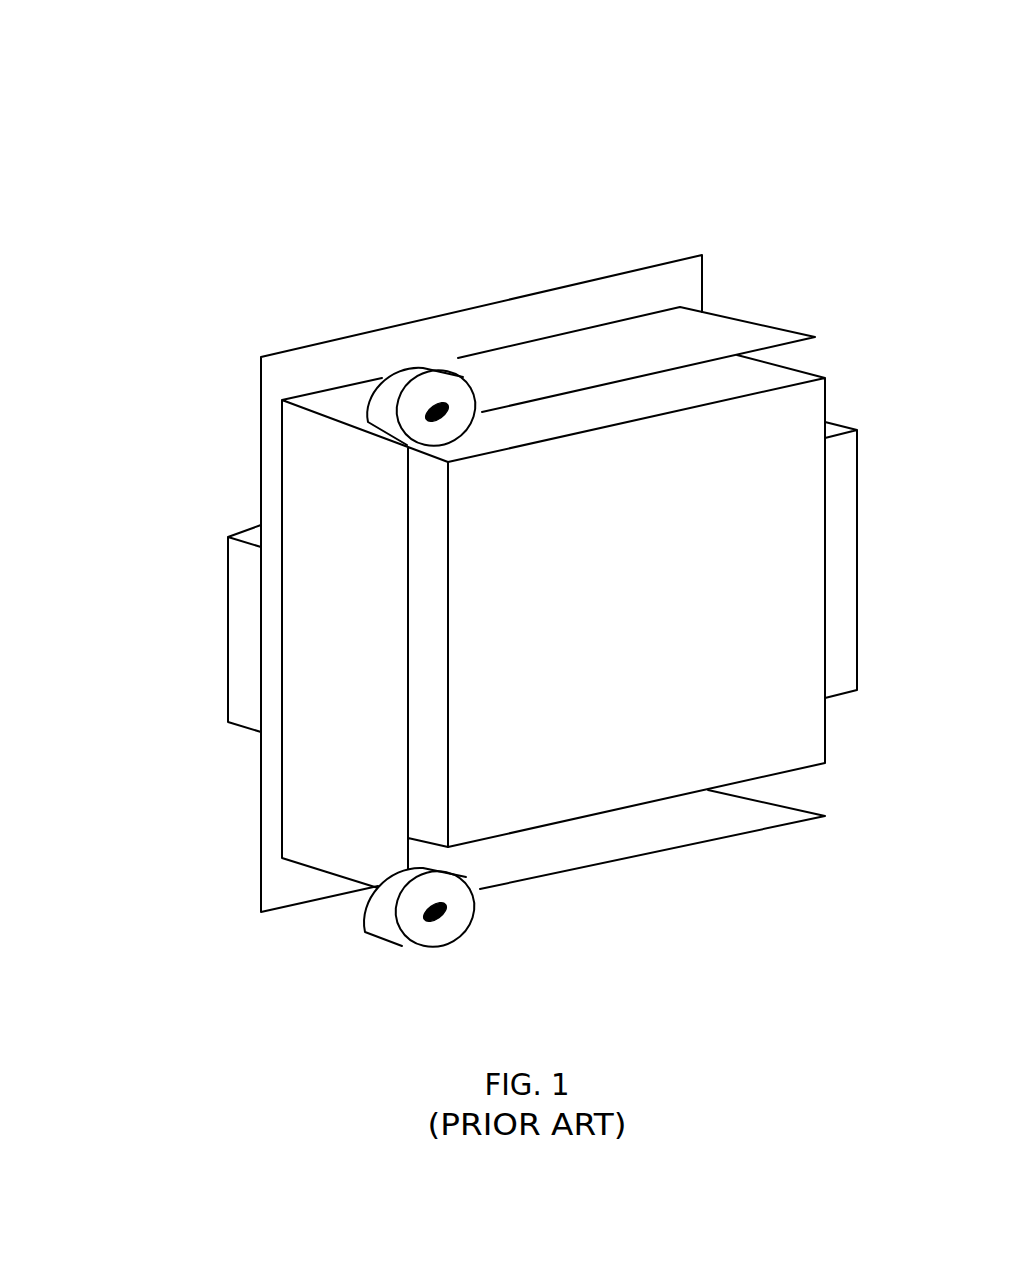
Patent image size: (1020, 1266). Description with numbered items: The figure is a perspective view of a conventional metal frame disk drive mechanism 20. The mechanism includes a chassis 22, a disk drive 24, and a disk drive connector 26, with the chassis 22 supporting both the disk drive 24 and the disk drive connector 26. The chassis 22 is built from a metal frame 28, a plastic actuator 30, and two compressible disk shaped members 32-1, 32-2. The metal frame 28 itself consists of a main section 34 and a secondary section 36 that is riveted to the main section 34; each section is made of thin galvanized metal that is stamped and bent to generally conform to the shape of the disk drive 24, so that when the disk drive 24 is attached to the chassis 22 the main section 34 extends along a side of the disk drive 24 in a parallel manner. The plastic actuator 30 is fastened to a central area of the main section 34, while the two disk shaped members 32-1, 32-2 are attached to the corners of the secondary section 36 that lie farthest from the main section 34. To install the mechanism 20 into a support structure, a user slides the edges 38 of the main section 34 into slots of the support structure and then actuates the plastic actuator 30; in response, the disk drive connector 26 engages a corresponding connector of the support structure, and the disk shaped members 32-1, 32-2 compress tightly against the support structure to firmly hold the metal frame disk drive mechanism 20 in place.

The metal frame disk drive mechanism 20 is at (97, 92).
The chassis 22 is at (748, 284).
The disk drive 24 is at (636, 601).
The disk drive connector 26 is at (843, 612).
The metal frame 28 is at (365, 633).
The plastic actuator 30 is at (242, 690).
The compressible disk shaped member 32-1 is at (385, 430).
The compressible disk shaped member 32-2 is at (378, 922).
The main section 34 is at (477, 308).
The secondary section 36 is at (668, 848).
The edges 38 is at (642, 254).